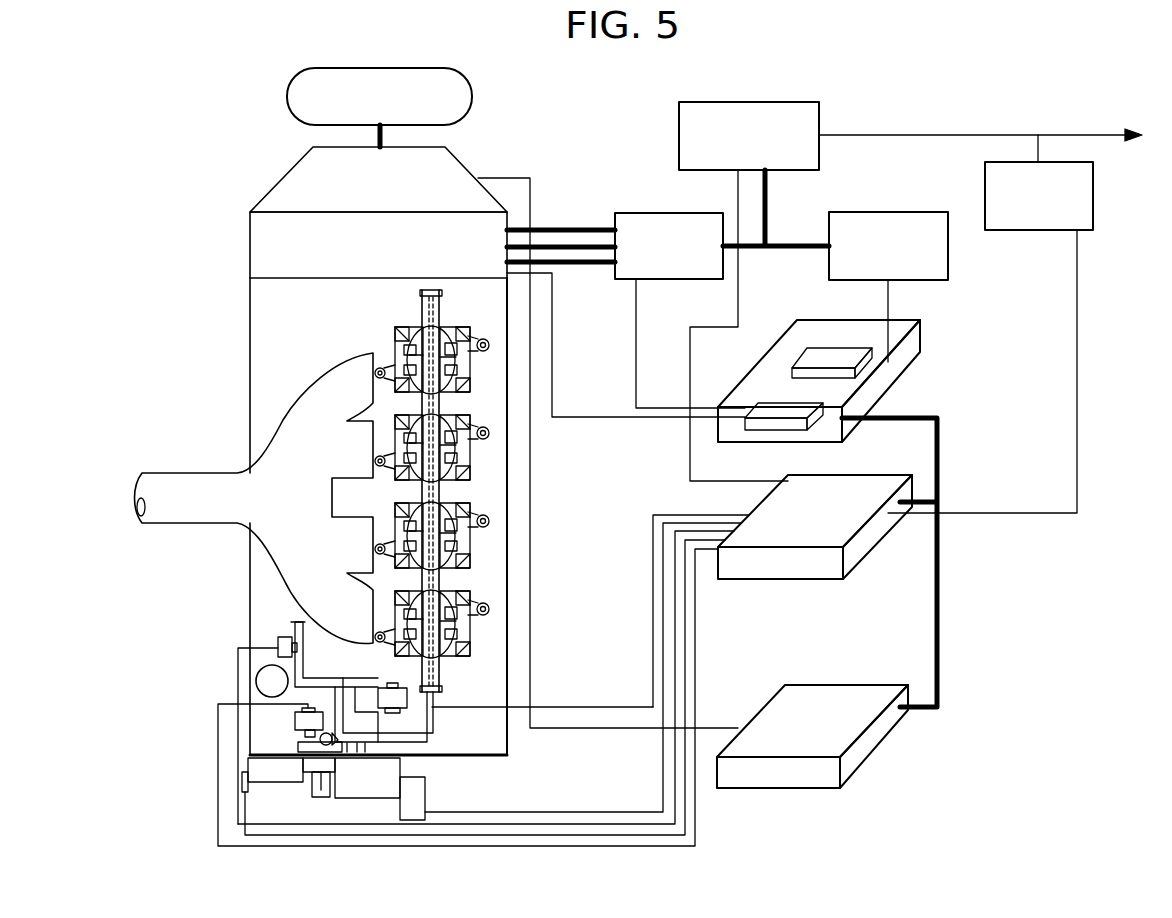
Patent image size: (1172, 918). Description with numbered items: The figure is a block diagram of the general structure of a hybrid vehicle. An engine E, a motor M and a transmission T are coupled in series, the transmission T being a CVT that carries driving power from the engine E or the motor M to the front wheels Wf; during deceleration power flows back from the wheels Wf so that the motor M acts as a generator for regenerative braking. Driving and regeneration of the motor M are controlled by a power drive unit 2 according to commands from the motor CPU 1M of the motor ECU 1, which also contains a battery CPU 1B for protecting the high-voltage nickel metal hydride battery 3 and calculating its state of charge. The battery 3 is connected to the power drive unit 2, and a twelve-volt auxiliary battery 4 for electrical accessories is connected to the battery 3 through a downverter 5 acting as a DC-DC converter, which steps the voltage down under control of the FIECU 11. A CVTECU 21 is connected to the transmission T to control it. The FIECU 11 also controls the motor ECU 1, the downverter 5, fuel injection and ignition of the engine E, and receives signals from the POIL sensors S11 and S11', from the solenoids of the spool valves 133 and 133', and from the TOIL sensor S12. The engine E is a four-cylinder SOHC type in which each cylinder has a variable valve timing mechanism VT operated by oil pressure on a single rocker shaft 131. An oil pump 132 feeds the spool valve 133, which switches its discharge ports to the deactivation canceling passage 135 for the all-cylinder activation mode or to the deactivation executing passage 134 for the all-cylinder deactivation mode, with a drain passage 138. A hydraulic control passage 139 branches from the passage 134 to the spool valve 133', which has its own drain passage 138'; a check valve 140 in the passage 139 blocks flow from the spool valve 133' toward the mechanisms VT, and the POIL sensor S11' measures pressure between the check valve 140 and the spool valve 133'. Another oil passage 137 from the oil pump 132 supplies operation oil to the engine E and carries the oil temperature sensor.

The front wheels Wf is at (473, 100).
The transmission T is at (293, 180).
The motor M is at (262, 234).
The engine E is at (262, 293).
The variable valve timing mechanism VT is at (475, 330).
The motor ECU 1 is at (848, 385).
The battery CPU 1B is at (857, 355).
The motor CPU 1M is at (825, 403).
The power drive unit 2 is at (652, 213).
The nickel metal hydride battery 3 is at (890, 212).
The auxiliary battery 4 is at (1093, 193).
The downverter 5 is at (822, 120).
The FIECU 11 is at (882, 530).
The CVTECU 21 is at (883, 730).
The rocker shaft 131 is at (440, 673).
The oil pump 132 is at (257, 681).
The spool valve 133 is at (538, 674).
The spool valve 133' is at (432, 687).
The deactivation executing passage 134 is at (433, 740).
The deactivation canceling passage 135 is at (407, 688).
The oil passage 137 is at (278, 652).
The drain passage 138 is at (306, 784).
The drain passage 138' is at (240, 802).
The hydraulic control passage 139 is at (297, 742).
The check valve 140 is at (332, 732).
The POIL sensor S11 is at (486, 677).
The POIL sensor S11' is at (433, 697).
The TOIL sensor S12 is at (276, 640).